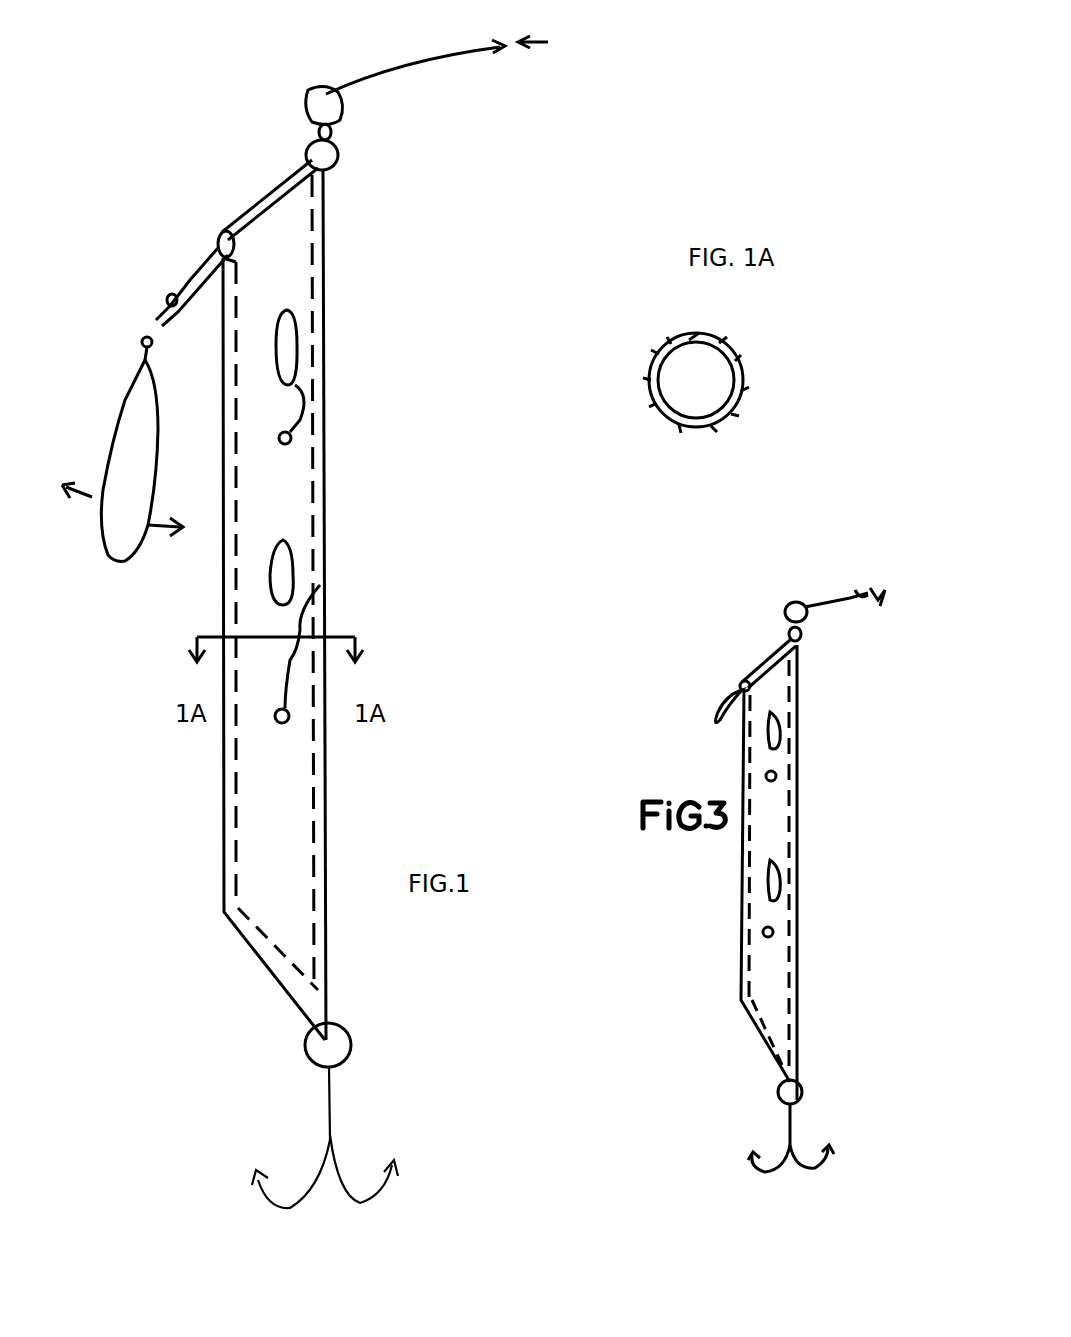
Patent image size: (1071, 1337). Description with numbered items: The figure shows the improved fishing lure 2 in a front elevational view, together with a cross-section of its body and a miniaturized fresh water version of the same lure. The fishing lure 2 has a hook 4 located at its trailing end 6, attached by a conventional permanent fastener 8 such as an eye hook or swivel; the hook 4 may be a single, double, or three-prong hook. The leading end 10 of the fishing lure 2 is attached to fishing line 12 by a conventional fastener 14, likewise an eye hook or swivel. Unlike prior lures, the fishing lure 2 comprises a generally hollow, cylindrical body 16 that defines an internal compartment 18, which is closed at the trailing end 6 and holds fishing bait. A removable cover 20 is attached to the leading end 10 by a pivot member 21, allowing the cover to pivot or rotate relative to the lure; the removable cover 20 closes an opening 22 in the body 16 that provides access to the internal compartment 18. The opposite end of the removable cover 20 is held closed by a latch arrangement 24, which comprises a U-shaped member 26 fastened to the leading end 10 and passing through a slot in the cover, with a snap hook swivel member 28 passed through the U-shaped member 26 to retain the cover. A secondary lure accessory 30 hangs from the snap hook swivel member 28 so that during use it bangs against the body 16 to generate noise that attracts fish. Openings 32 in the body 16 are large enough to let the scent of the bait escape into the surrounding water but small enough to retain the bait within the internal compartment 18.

In FIG. 1, the fishing lure 2 is at (392, 480).
In FIG. 1, the hook 4 is at (330, 1122).
In FIG. 3, the hook 4 is at (790, 1130).
In FIG. 1, the trailing end 6 is at (290, 1000).
In FIG. 3, the trailing end 6 is at (760, 1045).
In FIG. 1, the permanent fastener 8 is at (350, 1037).
In FIG. 3, the permanent fastener 8 is at (777, 1093).
In FIG. 1, the leading end 10 is at (258, 142).
In FIG. 1, the fishing line 12 is at (388, 72).
In FIG. 3, the fishing line 12 is at (840, 598).
In FIG. 1, the fastener 14 is at (345, 113).
In FIG. 3, the fastener 14 is at (788, 610).
In FIG. 1, the hollow body 16 is at (333, 380).
In FIG. 1A, the hollow body 16 is at (744, 382).
In FIG. 3, the hollow body 16 is at (744, 947).
In FIG. 1, the internal compartment 18 is at (290, 507).
In FIG. 1A, the internal compartment 18 is at (709, 385).
In FIG. 3, the internal compartment 18 is at (782, 838).
In FIG. 1, the removable cover 20 is at (258, 210).
In FIG. 3, the removable cover 20 is at (770, 660).
In FIG. 1, the pivot member 21 is at (340, 155).
In FIG. 1, the opening 22 is at (275, 228).
In FIG. 1, the latch arrangement 24 is at (210, 230).
In FIG. 1, the U-shaped member 26 is at (236, 246).
In FIG. 1, the snap hook swivel member 28 is at (184, 284).
In FIG. 3, the snap hook swivel member 28 is at (722, 706).
In FIG. 1, the secondary lure accessory 30 is at (126, 408).
In FIG. 1, the openings 32 is at (296, 340).
In FIG. 3, the openings 32 is at (775, 772).